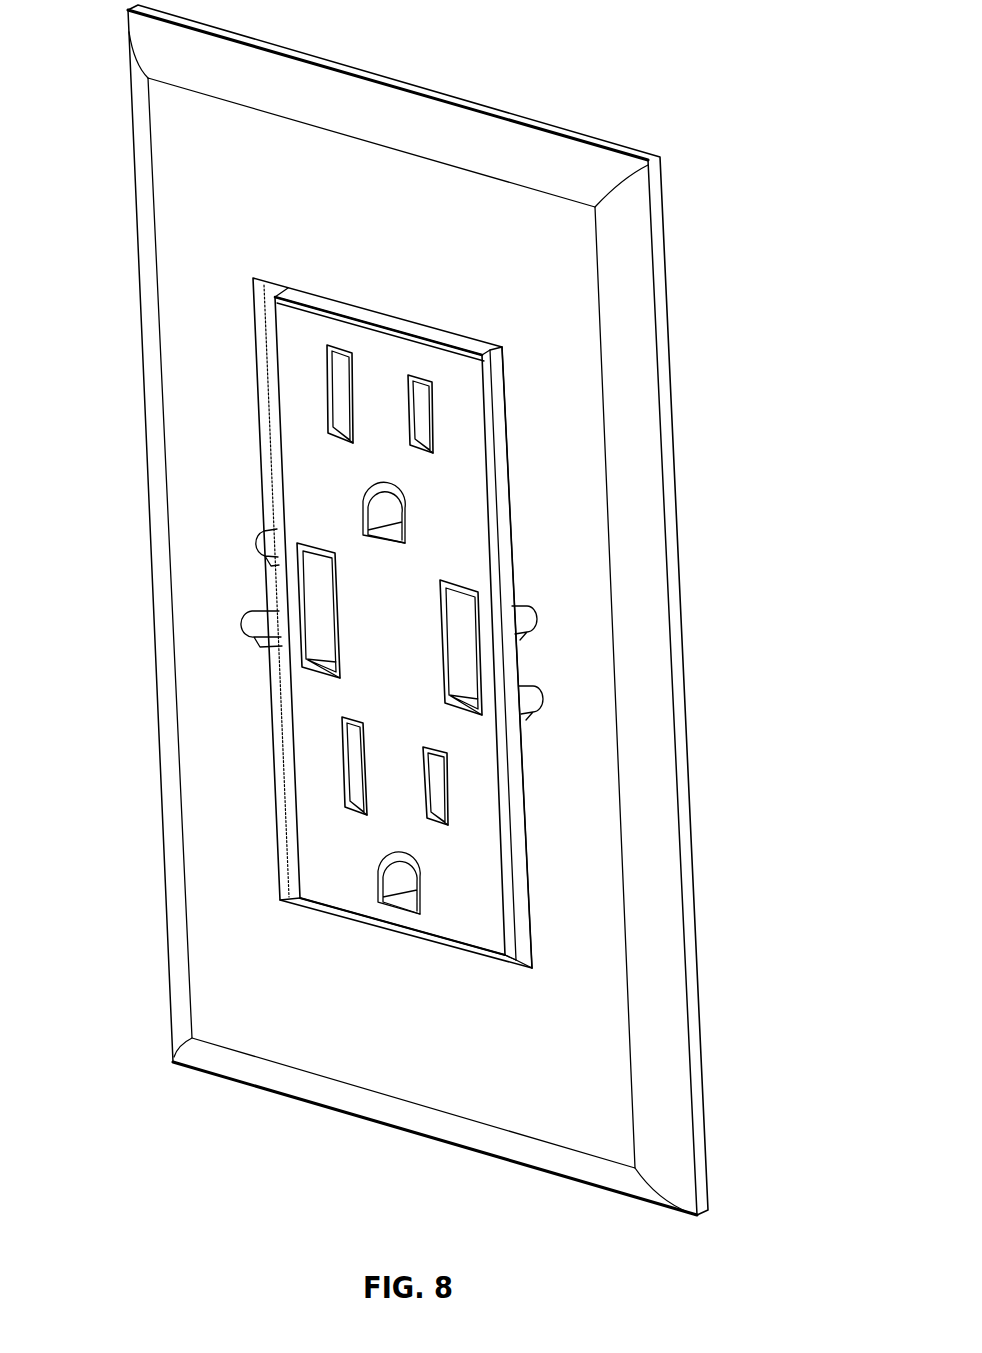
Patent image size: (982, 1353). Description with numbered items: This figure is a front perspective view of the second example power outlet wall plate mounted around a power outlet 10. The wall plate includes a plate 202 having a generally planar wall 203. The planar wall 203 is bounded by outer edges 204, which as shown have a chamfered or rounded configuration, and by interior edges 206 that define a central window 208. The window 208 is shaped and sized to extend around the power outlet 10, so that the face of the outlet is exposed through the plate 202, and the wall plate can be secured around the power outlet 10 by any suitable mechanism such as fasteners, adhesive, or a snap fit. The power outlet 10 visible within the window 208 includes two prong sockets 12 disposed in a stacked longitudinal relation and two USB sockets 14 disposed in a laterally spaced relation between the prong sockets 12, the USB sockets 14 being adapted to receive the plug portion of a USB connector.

The plate 202 is at (735, 106).
The generally planar wall 203 is at (452, 182).
The outer edges 204 is at (642, 460).
The central window 208 is at (258, 335).
The interior edges 206 is at (507, 387).
The power outlet 10 is at (467, 458).
The prong sockets 12 is at (322, 427).
The USB sockets 14 is at (483, 663).